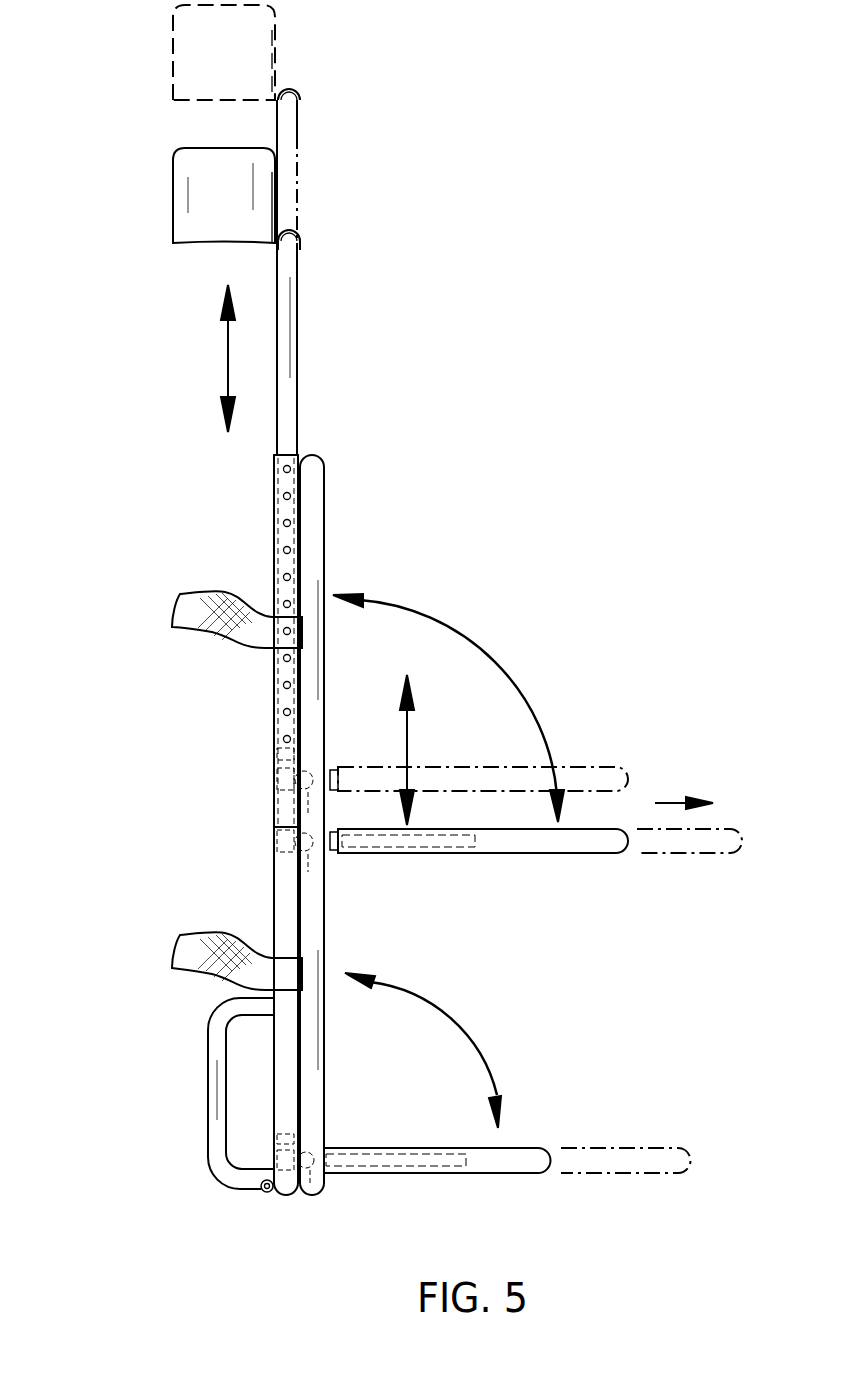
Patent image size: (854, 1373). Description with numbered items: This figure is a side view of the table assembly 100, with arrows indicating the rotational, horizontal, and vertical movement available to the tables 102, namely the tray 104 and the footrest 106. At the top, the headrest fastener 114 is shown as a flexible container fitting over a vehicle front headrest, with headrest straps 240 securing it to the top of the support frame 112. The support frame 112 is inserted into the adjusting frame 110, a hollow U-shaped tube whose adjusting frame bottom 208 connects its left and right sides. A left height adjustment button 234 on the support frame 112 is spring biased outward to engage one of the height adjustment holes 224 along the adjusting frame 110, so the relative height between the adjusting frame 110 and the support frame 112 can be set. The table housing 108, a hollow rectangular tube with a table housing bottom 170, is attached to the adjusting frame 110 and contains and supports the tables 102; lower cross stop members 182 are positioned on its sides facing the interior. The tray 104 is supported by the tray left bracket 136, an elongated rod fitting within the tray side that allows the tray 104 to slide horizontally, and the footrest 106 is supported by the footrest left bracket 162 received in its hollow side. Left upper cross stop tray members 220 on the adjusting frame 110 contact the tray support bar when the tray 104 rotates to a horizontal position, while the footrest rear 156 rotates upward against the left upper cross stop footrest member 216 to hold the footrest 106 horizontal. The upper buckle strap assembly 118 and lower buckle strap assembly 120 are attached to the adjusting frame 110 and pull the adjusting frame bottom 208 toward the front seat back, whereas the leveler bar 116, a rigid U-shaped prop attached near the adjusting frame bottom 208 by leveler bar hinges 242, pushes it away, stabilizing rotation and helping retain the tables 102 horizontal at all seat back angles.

The table assembly 100 is at (381, 858).
The tables 102 is at (610, 846).
The tray 104 is at (503, 848).
The footrest 106 is at (545, 1152).
The table housing 108 is at (323, 475).
The adjusting frame 110 is at (247, 823).
The support frame 112 is at (296, 312).
The headrest fastener 114 is at (170, 203).
The leveler bar 116 is at (215, 1067).
The upper buckle strap assembly 118 is at (182, 606).
The lower buckle strap assembly 120 is at (182, 964).
The tray left bracket 136 is at (383, 845).
The footrest rear 156 is at (280, 1153).
The footrest left bracket 162 is at (440, 1163).
The table housing bottom 170 is at (318, 1194).
The lower cross stop members 182 is at (316, 865).
The adjusting frame bottom 208 is at (287, 1193).
The left upper cross stop footrest member 216 is at (287, 1140).
The left upper cross stop tray members 220 is at (286, 822).
The height adjustment holes 224 is at (283, 550).
The left height adjustment button 234 is at (283, 496).
The headrest straps 240 is at (302, 234).
The leveler bar hinges 242 is at (258, 1190).